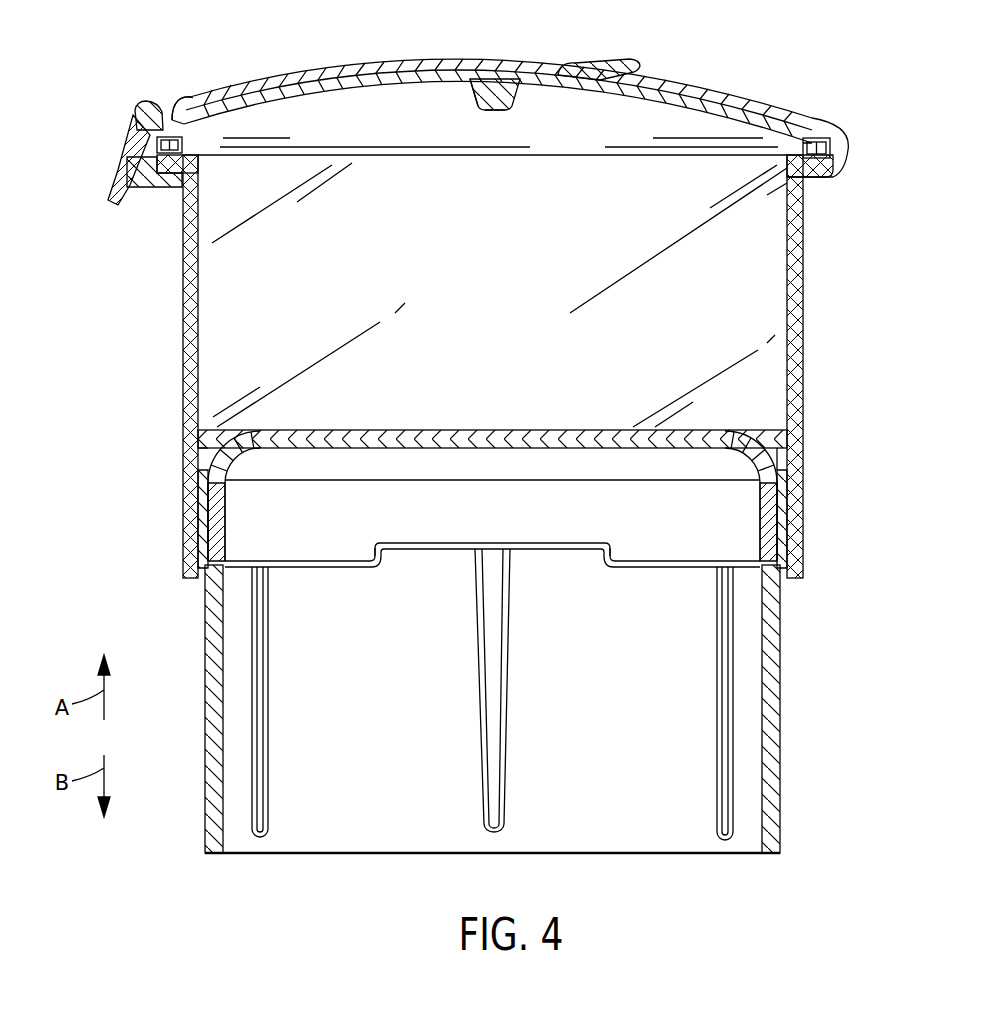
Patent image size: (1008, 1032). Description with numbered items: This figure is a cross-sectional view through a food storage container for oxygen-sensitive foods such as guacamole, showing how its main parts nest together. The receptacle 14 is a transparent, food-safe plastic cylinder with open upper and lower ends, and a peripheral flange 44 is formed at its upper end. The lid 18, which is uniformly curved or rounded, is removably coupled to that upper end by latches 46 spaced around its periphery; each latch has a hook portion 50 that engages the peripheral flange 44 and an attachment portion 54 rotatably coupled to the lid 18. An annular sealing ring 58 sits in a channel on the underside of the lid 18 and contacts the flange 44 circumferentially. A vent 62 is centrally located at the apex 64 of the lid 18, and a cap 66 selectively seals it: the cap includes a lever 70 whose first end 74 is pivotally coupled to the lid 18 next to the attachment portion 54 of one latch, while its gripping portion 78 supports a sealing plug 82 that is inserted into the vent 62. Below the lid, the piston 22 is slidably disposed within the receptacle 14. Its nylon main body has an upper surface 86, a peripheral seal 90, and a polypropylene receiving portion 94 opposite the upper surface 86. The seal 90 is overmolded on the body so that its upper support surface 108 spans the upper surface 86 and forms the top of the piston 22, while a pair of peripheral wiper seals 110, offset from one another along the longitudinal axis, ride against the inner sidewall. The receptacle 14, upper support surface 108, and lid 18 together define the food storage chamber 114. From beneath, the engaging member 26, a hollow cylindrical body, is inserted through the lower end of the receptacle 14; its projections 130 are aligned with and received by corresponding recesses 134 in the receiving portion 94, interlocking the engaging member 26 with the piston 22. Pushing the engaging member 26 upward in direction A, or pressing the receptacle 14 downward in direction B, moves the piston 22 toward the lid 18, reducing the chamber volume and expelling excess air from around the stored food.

The receptacle 14 is at (806, 300).
The lid 18 is at (716, 108).
The piston 22 is at (786, 512).
The engaging member 26 is at (770, 697).
The peripheral flange 44 is at (818, 180).
The latches 46 is at (133, 140).
The hook portion 50 is at (160, 188).
The attachment portion 54 is at (152, 101).
The annular sealing ring 58 is at (836, 145).
The vent 62 is at (474, 96).
The apex 64 is at (496, 78).
The cap 66 is at (392, 74).
The lever 70 is at (336, 84).
The first end 74 is at (186, 97).
The gripping portion 78 is at (600, 62).
The sealing plug 82 is at (504, 112).
The upper surface 86 is at (520, 440).
The peripheral seal 90 is at (785, 450).
The receiving portion 94 is at (203, 540).
The upper support surface 108 is at (453, 429).
The peripheral wiper seals 110 is at (190, 438).
The food storage chamber 114 is at (205, 316).
The projections 130 is at (561, 545).
The recesses 134 is at (565, 550).